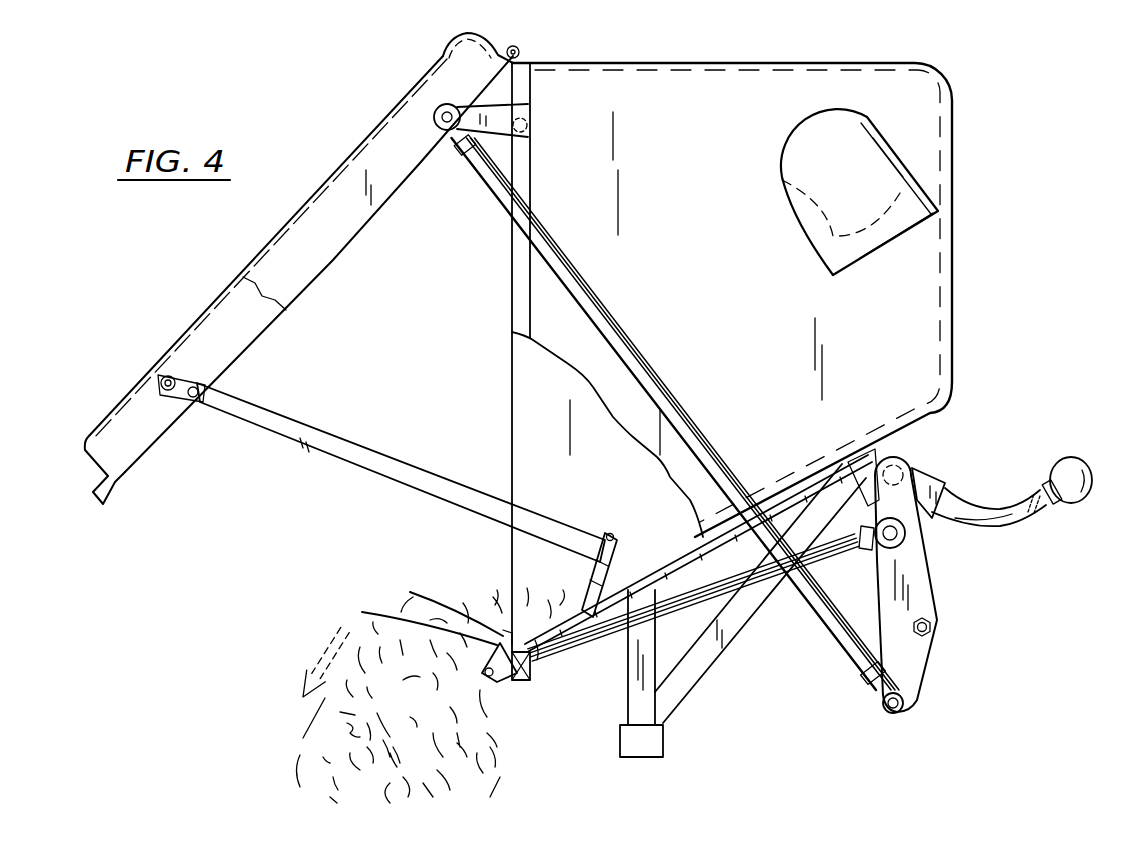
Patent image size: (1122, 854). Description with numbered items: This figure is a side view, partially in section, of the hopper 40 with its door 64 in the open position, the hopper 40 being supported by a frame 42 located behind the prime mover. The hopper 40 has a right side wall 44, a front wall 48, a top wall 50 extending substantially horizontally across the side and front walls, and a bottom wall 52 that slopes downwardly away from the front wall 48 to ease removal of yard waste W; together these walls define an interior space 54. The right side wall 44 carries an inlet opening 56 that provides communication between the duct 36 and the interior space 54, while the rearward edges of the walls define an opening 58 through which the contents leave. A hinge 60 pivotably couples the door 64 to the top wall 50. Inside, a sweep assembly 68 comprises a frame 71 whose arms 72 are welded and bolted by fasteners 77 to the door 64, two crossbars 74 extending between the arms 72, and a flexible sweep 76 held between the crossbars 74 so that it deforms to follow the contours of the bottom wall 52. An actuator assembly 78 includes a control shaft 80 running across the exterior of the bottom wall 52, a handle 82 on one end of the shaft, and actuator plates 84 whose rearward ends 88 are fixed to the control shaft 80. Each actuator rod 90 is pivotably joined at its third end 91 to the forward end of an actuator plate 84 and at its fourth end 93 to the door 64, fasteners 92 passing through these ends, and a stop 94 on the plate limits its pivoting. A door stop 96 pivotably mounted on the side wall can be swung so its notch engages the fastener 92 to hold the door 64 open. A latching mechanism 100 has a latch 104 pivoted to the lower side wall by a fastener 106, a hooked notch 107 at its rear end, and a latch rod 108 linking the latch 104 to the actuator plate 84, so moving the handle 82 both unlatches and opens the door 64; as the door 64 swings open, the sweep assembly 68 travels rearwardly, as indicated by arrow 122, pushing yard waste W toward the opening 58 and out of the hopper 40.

The duct 36 is at (813, 253).
The hopper 40 is at (695, 63).
The frame 42 is at (695, 690).
The right side wall 44 is at (937, 347).
The front wall 48 is at (954, 150).
The top wall 50 is at (836, 30).
The bottom wall 52 is at (738, 554).
The interior space 54 is at (542, 432).
The inlet opening 56 is at (785, 185).
The opening 58 is at (512, 300).
The hinge 60 is at (519, 50).
The door 64 is at (268, 218).
The sweep assembly 68 is at (412, 430).
The frame 71 is at (572, 482).
The arm 72 is at (360, 466).
The crossbar 74 is at (612, 536).
The sweep 76 is at (617, 562).
The fastener 77 is at (193, 398).
The actuator assembly 78 is at (1003, 563).
The control shaft 80 is at (925, 458).
The handle 82 is at (1013, 517).
The actuator plate 84 is at (935, 586).
The rearward end 88 is at (905, 455).
The actuator rod 90 is at (612, 318).
The third end 91 is at (903, 713).
The fastener 92 is at (437, 108).
The fourth end 93 is at (442, 103).
The stop 94 is at (928, 636).
The door stop 96 is at (490, 110).
The latching mechanism 100 is at (521, 692).
The latch 104 is at (400, 648).
The fastener 106 is at (484, 676).
The notch 107 is at (436, 605).
The latch rod 108 is at (600, 640).
The arrow 122 is at (560, 567).
The yard waste W is at (296, 726).